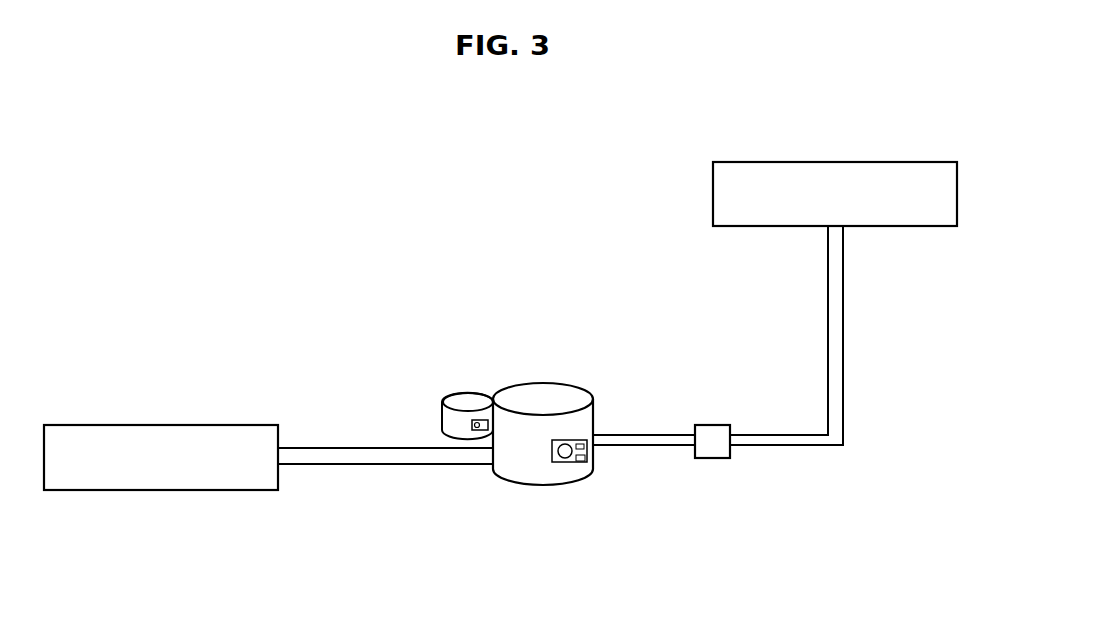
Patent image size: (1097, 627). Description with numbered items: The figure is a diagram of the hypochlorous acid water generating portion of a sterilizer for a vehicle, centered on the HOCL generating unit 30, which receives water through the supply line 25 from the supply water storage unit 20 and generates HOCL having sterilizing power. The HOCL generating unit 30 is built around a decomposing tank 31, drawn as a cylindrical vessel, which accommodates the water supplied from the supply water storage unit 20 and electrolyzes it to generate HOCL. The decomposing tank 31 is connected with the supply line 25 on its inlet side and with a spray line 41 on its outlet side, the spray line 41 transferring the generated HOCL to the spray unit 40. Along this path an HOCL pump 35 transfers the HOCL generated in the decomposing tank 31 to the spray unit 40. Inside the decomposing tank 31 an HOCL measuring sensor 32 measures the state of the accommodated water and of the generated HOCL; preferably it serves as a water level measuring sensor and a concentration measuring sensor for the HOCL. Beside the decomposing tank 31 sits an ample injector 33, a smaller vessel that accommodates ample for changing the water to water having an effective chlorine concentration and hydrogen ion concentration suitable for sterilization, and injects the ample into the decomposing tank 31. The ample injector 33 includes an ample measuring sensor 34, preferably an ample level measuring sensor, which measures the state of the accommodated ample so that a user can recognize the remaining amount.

The supply water storage unit 20 is at (161, 457).
The supply line 25 is at (385, 479).
The HOCL generating unit 30 is at (495, 398).
The decomposing tank 31 is at (536, 399).
The HOCL measuring sensor 32 is at (571, 439).
The ample injector 33 is at (443, 398).
The ample measuring sensor 34 is at (476, 420).
The HOCL pump 35 is at (716, 447).
The spray unit 40 is at (835, 194).
The spray line 41 is at (846, 335).